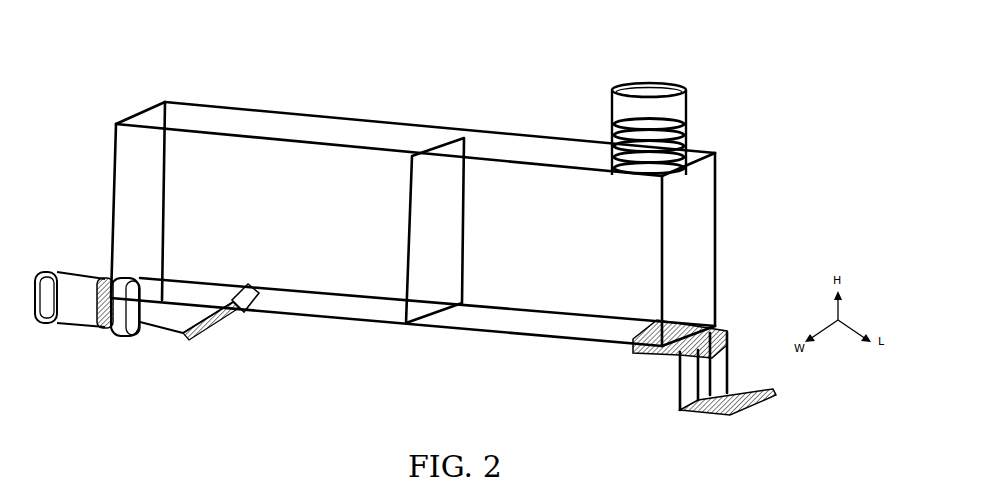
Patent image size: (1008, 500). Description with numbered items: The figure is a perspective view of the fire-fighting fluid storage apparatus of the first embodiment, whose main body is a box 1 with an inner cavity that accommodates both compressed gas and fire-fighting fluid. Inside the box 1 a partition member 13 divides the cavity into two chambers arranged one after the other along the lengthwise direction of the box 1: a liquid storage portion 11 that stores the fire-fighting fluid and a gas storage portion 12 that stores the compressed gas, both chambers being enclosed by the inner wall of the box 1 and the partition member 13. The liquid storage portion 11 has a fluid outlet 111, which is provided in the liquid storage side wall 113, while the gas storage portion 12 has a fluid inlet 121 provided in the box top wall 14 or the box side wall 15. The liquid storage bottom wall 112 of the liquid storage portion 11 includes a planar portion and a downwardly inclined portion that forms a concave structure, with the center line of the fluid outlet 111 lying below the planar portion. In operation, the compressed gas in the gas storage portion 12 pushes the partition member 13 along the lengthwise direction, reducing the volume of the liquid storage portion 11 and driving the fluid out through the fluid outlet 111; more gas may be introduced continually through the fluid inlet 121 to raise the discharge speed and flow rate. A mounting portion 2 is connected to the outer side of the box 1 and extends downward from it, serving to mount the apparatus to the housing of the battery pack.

The box 1 is at (114, 58).
The liquid storage portion 11 is at (217, 140).
The fluid outlet 111 is at (73, 310).
The liquid storage bottom wall 112 is at (310, 308).
The liquid storage side wall 113 is at (126, 213).
The gas storage portion 12 is at (508, 317).
The partition member 13 is at (401, 318).
The box top wall 14 is at (522, 142).
The box side wall 15 is at (702, 233).
The fluid inlet 121 is at (647, 83).
The mounting portion 2 is at (731, 364).